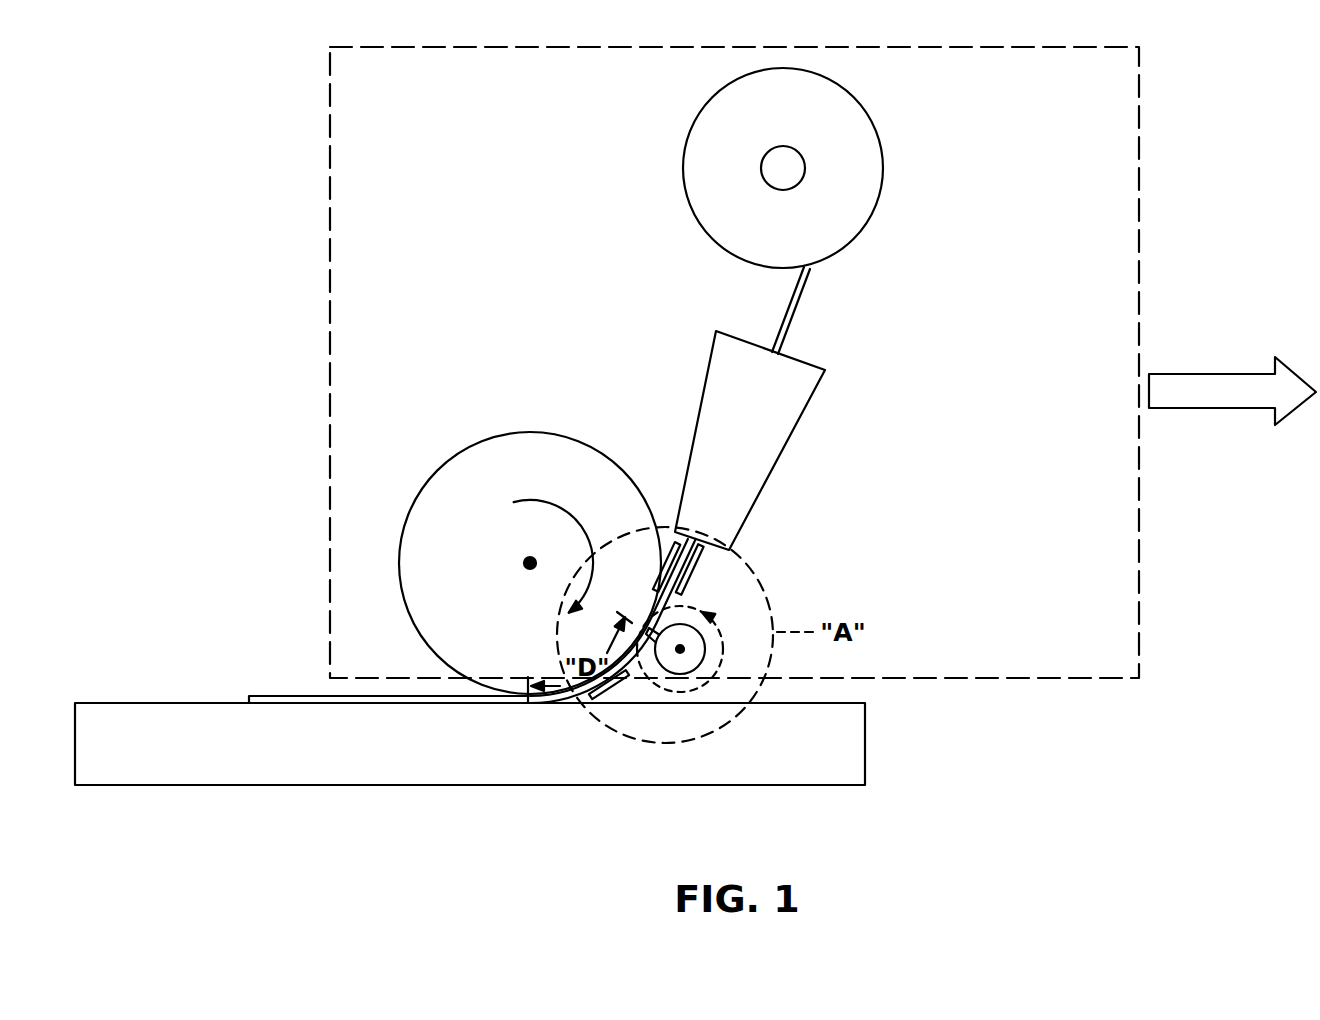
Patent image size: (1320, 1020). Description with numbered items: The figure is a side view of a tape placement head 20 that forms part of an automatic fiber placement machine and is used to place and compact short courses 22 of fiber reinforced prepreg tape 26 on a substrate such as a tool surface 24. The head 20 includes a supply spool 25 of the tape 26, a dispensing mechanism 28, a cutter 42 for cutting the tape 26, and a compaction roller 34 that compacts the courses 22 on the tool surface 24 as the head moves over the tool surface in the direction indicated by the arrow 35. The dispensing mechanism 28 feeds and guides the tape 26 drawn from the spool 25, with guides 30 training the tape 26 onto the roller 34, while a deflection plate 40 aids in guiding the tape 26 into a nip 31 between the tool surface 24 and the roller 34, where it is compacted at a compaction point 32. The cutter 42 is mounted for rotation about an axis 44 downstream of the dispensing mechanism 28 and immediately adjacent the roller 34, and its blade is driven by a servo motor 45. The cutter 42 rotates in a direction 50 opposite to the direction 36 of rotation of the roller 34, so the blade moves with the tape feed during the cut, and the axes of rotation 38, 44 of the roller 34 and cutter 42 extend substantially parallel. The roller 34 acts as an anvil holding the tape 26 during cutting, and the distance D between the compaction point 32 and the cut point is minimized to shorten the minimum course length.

The tape placement head 20 is at (330, 221).
The courses 22 is at (280, 695).
The tool surface 24 is at (152, 702).
The supply spool 25 is at (850, 160).
The prepreg tape 26 is at (797, 303).
The dispensing mechanism 28 is at (772, 410).
The guides 30 is at (702, 578).
The nip 31 is at (579, 706).
The compaction point 32 is at (540, 708).
The compaction roller 34 is at (473, 477).
The arrow 35 is at (1213, 393).
The direction of rotation of the roller 36 is at (423, 549).
The axis of rotation of the roller 38 is at (530, 563).
The deflection plate 40 is at (611, 692).
The cutter 42 is at (675, 665).
The axis 44 is at (682, 649).
The servo motor 45 is at (707, 685).
The direction of rotation of the cutter 50 is at (725, 637).